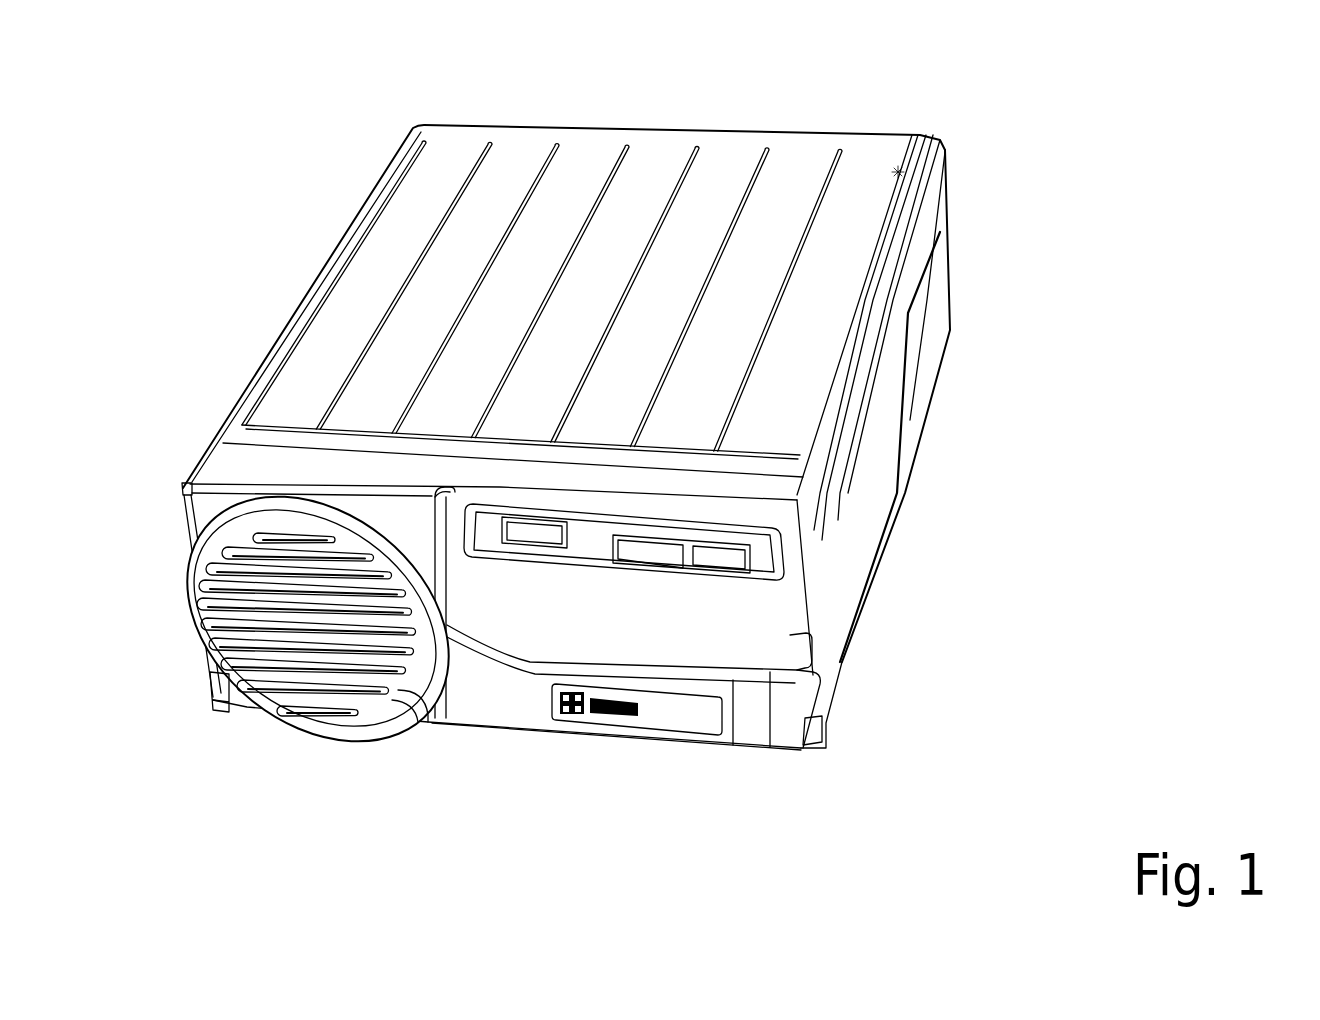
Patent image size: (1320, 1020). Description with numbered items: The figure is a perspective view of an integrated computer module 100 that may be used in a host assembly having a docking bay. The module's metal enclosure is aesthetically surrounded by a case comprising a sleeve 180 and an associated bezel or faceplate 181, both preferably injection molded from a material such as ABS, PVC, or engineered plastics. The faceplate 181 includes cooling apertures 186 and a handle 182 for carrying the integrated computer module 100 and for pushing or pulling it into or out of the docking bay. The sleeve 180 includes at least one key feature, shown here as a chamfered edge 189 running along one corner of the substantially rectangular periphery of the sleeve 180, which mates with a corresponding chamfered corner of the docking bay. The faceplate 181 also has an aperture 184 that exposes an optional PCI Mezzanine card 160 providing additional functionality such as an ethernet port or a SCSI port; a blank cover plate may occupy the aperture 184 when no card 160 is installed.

The integrated computer module 100 is at (1153, 107).
The sleeve 180 is at (855, 147).
The faceplate 181 is at (225, 697).
The handle 182 is at (567, 718).
The aperture 184 is at (787, 578).
The cooling apertures 186 is at (400, 735).
The chamfered edge 189 is at (853, 383).
The PCI Mezzanine card 160 is at (763, 542).